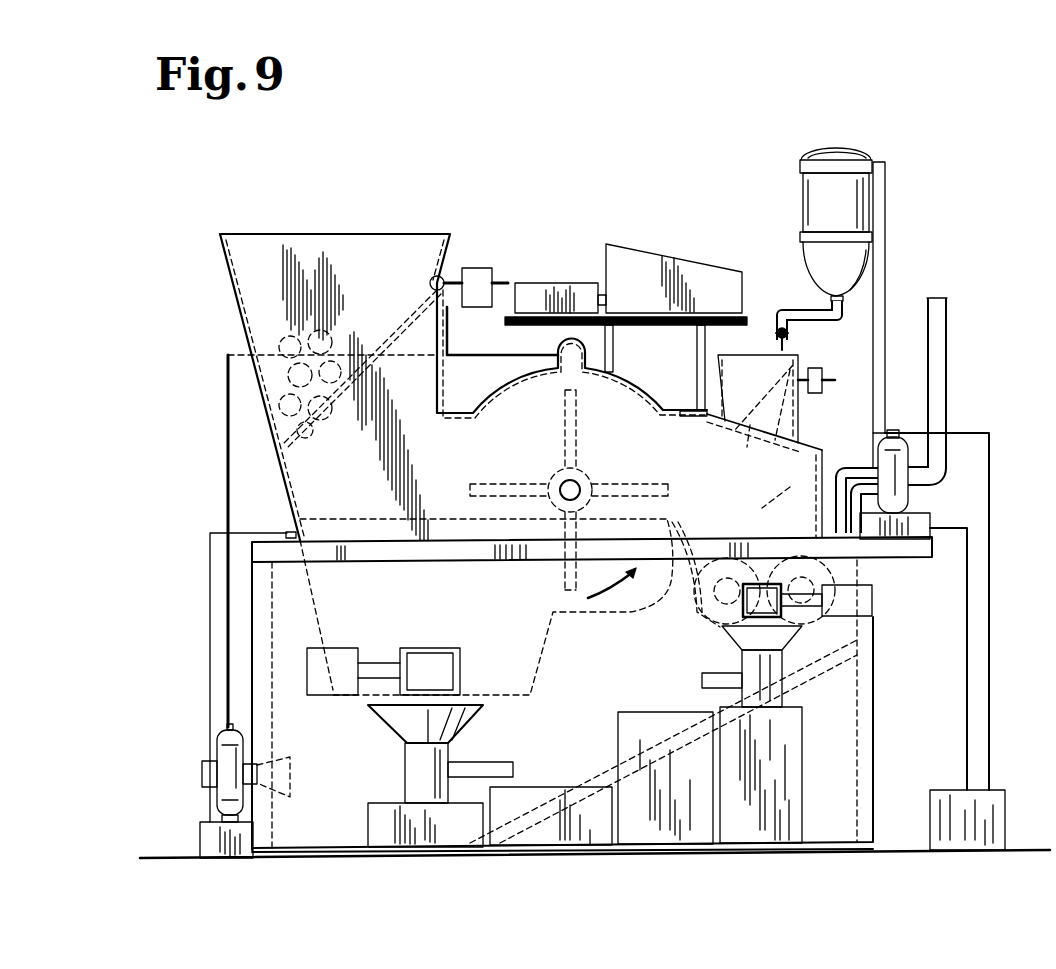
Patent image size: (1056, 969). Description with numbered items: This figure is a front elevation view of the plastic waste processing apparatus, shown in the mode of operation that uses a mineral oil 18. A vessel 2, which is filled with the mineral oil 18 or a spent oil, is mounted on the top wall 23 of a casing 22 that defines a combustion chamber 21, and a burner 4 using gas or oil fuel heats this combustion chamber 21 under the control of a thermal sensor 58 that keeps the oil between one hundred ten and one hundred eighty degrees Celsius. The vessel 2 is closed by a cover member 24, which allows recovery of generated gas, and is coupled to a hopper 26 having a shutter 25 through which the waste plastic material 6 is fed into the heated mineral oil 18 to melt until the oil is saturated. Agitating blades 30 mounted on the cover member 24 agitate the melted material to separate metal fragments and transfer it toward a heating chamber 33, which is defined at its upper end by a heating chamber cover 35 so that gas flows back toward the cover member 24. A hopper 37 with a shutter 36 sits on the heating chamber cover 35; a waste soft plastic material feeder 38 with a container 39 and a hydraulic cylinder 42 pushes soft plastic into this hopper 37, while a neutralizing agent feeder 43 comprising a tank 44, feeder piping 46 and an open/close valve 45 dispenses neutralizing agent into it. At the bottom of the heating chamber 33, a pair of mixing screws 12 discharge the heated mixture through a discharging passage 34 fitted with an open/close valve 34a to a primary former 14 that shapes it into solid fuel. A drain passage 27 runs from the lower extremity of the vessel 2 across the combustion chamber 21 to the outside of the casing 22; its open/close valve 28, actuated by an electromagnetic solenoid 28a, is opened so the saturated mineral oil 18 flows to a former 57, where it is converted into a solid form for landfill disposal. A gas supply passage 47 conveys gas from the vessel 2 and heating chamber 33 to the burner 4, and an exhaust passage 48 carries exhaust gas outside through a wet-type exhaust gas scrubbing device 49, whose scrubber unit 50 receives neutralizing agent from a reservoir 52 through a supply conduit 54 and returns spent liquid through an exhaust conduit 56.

The vessel 2 is at (504, 700).
The burner 4 is at (211, 757).
The waste plastic material 6 is at (300, 345).
The mixing screws 12 is at (712, 610).
The primary former 14 is at (740, 665).
The mineral oil 18 is at (387, 533).
The combustion chamber 21 is at (293, 708).
The casing 22 is at (255, 607).
The top wall 23 is at (264, 541).
The cover member 24 is at (516, 405).
The shutter 25 is at (372, 342).
The hopper 26 is at (320, 245).
The drain passage 27 is at (420, 650).
The open/close valve 28 is at (432, 660).
The electromagnetic solenoid 28a is at (345, 650).
The agitating blades 30 is at (565, 415).
The heating chamber 33 is at (790, 487).
The discharging passage 34 is at (758, 584).
The open/close valve 34a is at (873, 606).
The heating chamber cover 35 is at (720, 414).
The shutter 36 is at (761, 477).
The hopper 37 is at (740, 367).
The waste soft plastic material feeder 38 is at (576, 258).
The waste soft plastic material container 39 is at (643, 255).
The hydraulic cylinder 42 is at (533, 290).
The neutralizing agent feeder 43 is at (866, 148).
The tank 44 is at (822, 150).
The open/close valve 45 is at (790, 334).
The neutralizing agent feeder piping 46 is at (800, 312).
The gas supply passage 47 is at (228, 400).
The exhaust passage 48 is at (947, 322).
The wet-type exhaust gas scrubbing device 49 is at (908, 493).
The wet-type scrubber unit 50 is at (906, 432).
The neutralizing agent reservoir 52 is at (998, 800).
The supply conduit 54 is at (990, 682).
The exhaust conduit 56 is at (966, 682).
The former 57 is at (400, 765).
The thermal sensor 58 is at (287, 530).